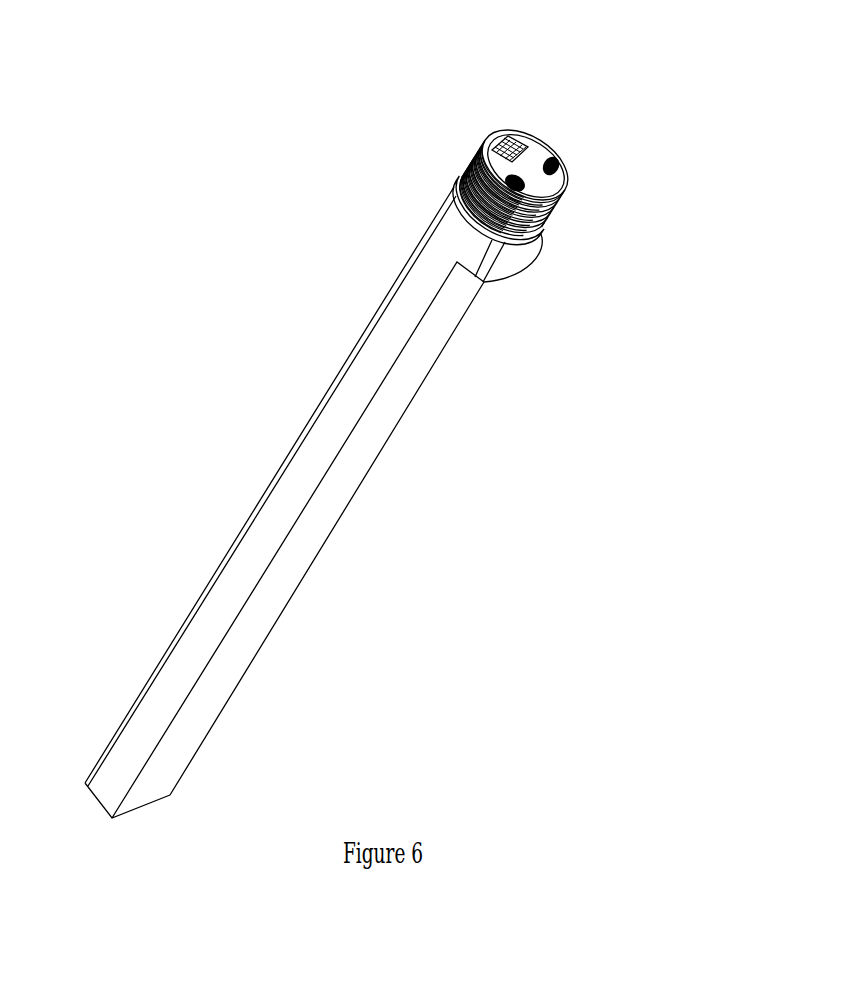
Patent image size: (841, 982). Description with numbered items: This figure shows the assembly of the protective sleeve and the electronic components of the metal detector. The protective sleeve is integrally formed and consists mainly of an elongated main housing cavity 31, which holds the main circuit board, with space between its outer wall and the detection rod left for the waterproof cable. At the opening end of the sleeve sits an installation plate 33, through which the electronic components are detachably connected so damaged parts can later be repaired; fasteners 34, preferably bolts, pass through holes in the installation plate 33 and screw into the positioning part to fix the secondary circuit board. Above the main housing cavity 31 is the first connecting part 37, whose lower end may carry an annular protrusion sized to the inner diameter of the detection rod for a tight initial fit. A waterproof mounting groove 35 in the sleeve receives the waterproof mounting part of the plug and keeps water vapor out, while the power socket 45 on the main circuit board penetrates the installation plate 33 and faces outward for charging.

The main housing cavity 31 is at (277, 498).
The installation plate 33 is at (537, 157).
The fasteners 34 is at (468, 157).
The waterproof mounting groove 35 is at (507, 275).
The first connecting part 37 is at (560, 207).
The power socket 45 is at (500, 137).